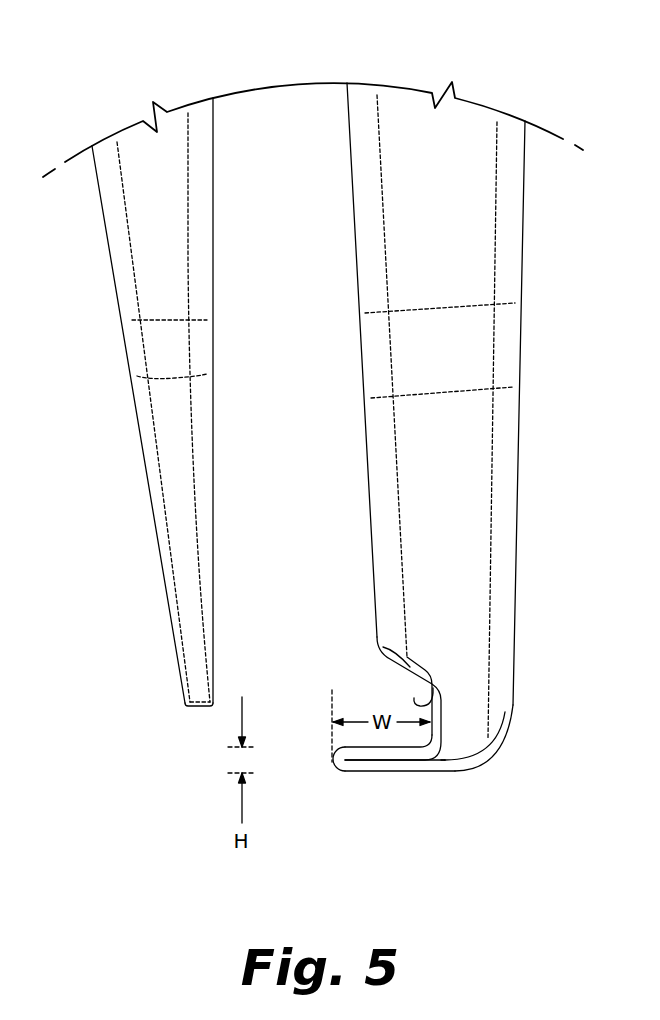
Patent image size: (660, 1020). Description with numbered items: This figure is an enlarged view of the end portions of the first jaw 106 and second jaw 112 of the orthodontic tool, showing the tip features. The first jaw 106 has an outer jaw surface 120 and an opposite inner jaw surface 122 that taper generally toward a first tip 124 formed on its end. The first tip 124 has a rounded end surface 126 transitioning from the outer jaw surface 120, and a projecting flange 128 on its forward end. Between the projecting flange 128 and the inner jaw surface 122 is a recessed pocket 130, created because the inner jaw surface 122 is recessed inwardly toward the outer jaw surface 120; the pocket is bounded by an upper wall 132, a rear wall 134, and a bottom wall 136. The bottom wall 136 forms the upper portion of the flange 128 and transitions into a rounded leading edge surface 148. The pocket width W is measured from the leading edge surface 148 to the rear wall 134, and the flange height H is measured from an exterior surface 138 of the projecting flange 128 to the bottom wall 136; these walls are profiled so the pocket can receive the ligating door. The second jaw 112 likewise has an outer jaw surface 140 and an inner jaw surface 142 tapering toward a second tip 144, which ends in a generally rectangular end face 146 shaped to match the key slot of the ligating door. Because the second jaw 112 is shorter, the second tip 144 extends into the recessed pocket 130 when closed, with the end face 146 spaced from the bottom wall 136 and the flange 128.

The first jaw 106 is at (442, 215).
The second jaw 112 is at (157, 205).
The outer jaw surface 120 is at (518, 420).
The inner jaw surface 122 is at (365, 438).
The first tip 124 is at (505, 788).
The rounded end surface 126 is at (500, 746).
The projecting flange 128 is at (372, 762).
The recessed pocket 130 is at (345, 678).
The upper wall 132 is at (390, 678).
The rear wall 134 is at (415, 700).
The bottom wall 136 is at (353, 745).
The exterior surface 138 is at (403, 772).
The outer jaw surface 140 is at (137, 417).
The inner jaw surface 142 is at (213, 343).
The second tip 144 is at (150, 675).
The end face 146 is at (200, 707).
The leading edge surface 148 is at (333, 760).